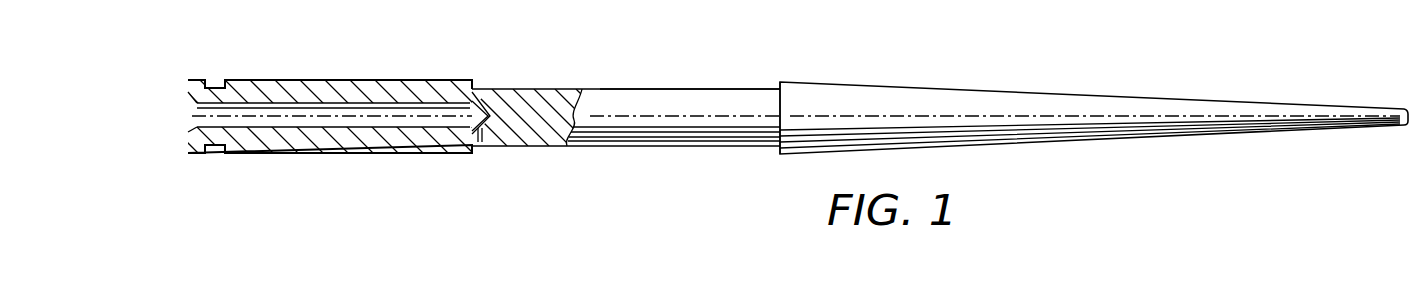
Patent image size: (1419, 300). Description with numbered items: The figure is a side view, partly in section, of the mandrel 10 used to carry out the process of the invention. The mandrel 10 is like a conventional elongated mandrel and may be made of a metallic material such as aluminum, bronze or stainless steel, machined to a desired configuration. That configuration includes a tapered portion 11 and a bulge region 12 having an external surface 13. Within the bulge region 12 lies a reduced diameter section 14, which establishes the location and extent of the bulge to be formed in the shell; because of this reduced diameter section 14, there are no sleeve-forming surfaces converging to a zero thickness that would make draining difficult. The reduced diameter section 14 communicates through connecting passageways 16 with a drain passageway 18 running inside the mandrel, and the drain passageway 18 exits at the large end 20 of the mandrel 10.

The mandrel 10 is at (273, 82).
The tapered portion 11 is at (1027, 91).
The bulge region 12 is at (608, 89).
The external surface 13 is at (748, 87).
The reduced diameter section 14 is at (698, 100).
The connecting passageways 16 is at (493, 130).
The drain passageway 18 is at (363, 115).
The large end 20 is at (203, 156).